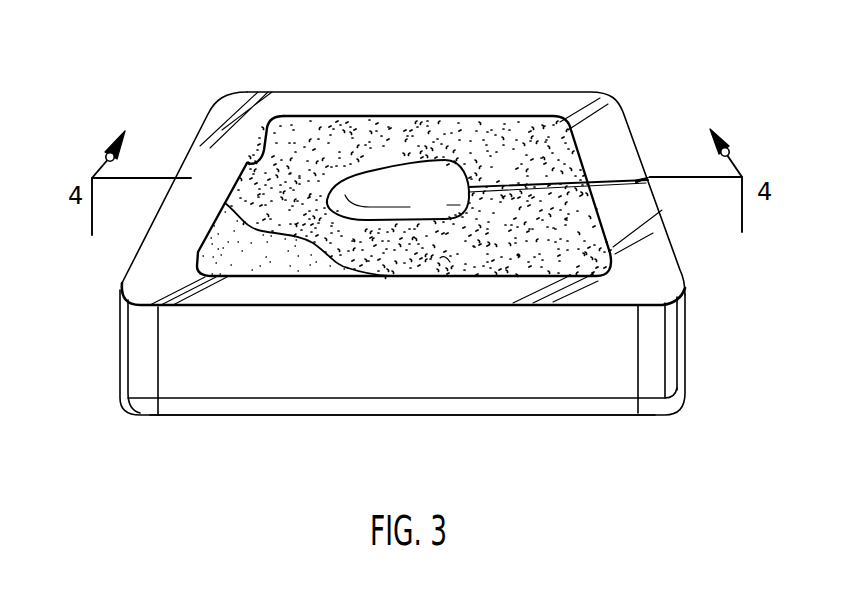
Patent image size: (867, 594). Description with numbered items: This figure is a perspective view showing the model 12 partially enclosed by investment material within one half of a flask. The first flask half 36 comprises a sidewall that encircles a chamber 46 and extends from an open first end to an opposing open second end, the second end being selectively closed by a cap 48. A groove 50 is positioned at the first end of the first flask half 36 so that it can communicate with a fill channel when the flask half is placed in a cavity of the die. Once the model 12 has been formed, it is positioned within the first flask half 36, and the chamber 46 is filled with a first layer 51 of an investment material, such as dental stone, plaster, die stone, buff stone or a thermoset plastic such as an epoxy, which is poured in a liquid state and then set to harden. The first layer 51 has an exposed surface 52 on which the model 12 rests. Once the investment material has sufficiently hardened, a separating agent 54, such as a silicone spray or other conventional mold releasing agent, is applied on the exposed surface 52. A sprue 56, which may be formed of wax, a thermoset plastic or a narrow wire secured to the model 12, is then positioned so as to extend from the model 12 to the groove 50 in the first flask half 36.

The model 12 is at (415, 187).
The first flask half 36 is at (653, 355).
The chamber 46 is at (262, 120).
The cap 48 is at (590, 407).
The groove 50 is at (652, 178).
The first layer 51 is at (446, 258).
The exposed surface 52 is at (533, 123).
The separating agent 54 is at (220, 256).
The sprue 56 is at (565, 183).